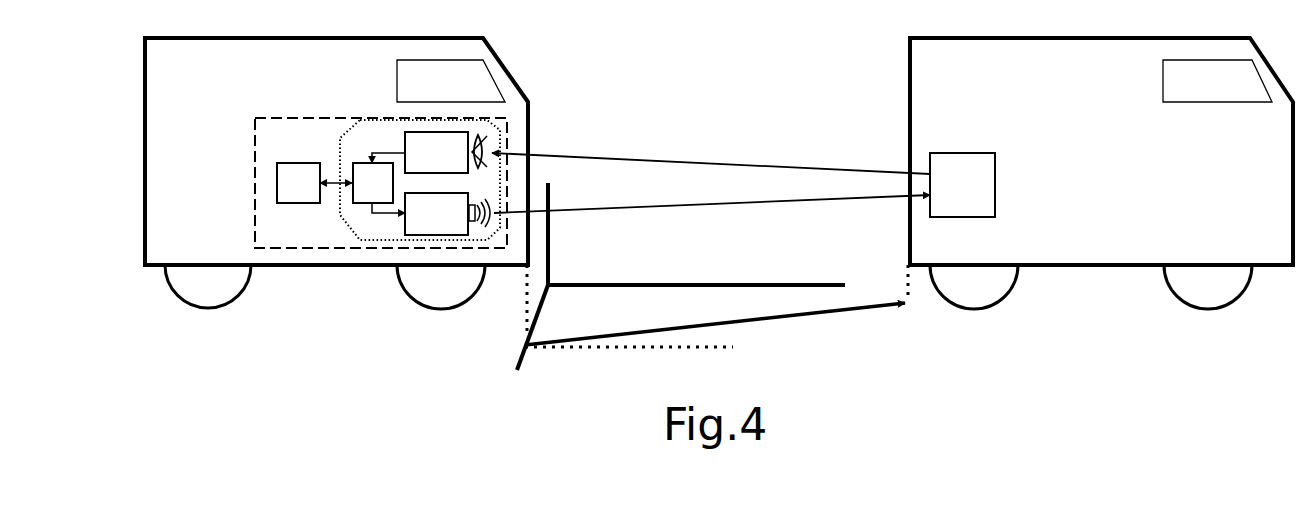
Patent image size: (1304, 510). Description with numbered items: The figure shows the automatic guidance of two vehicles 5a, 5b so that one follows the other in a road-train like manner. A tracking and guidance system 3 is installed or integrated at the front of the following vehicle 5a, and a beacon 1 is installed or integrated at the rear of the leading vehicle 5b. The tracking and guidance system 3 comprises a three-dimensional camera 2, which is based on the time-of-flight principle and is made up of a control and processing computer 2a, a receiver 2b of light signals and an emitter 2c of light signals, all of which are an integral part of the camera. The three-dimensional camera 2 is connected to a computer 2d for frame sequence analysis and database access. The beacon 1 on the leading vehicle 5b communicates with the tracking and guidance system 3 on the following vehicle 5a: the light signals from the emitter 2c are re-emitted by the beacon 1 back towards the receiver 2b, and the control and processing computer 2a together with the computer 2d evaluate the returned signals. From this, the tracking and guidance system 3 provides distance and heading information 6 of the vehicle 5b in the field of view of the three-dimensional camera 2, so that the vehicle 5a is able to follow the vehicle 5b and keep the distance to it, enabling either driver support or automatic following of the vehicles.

The beacon 1 is at (962, 185).
The three-dimensional camera 2 is at (420, 183).
The control and processing computer 2a is at (373, 183).
The receiver 2b is at (446, 152).
The emitter 2c is at (447, 214).
The computer 2d is at (298, 183).
The tracking and guidance system 3 is at (381, 183).
The vehicle 5a is at (336, 173).
The vehicle 5b is at (1101, 173).
The distance and heading information 6 is at (727, 323).